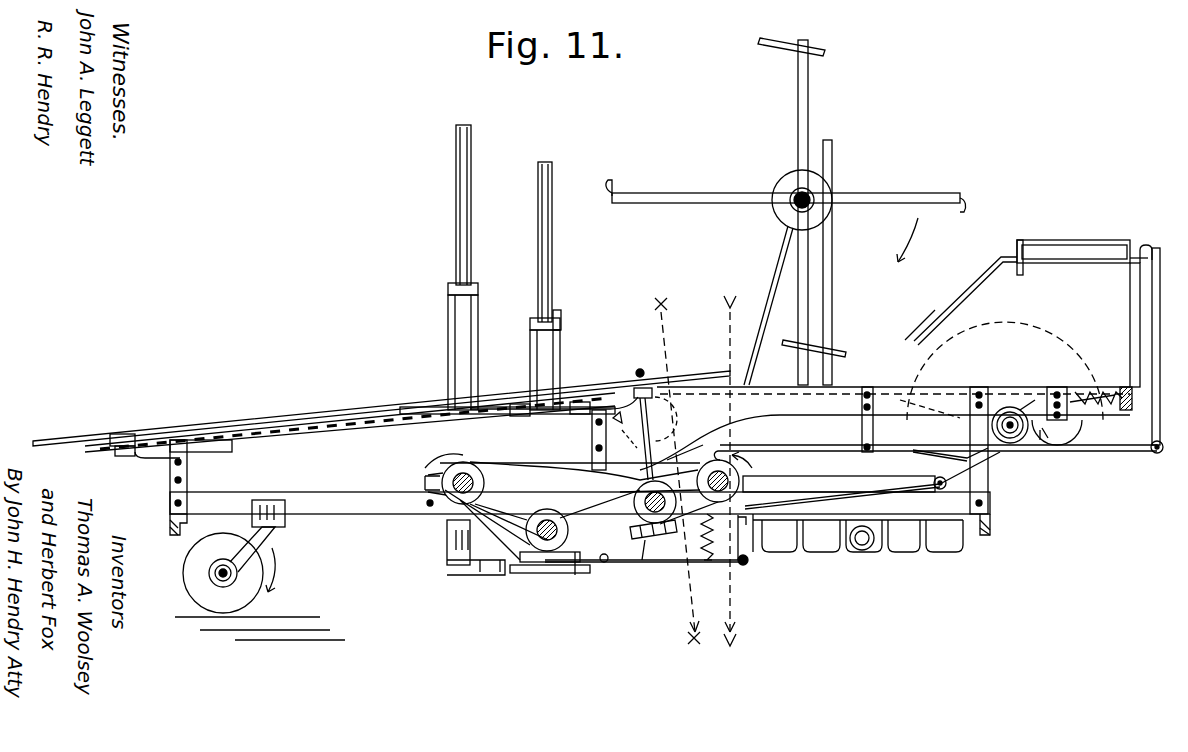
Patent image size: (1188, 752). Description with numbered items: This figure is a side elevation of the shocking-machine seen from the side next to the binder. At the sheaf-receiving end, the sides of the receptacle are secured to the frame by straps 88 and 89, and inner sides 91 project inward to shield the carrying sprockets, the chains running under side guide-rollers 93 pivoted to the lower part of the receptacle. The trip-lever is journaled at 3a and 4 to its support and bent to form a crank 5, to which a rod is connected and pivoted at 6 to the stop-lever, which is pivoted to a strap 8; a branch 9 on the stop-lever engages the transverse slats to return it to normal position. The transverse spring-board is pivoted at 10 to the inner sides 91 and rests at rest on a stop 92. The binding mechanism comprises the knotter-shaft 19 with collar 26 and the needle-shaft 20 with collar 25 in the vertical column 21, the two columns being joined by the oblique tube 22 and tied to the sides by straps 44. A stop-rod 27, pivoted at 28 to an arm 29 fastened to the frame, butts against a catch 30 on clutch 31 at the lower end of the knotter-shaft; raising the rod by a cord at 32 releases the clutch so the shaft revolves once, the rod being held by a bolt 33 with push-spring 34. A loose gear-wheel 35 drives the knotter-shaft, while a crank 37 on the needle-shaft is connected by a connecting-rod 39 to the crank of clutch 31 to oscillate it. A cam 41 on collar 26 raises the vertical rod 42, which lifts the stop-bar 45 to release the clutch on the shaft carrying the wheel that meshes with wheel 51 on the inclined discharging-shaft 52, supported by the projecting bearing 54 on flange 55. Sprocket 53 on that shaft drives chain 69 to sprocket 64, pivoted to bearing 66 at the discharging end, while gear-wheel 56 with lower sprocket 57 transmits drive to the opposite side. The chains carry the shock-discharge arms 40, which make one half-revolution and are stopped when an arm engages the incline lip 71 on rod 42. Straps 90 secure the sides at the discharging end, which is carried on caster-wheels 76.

The needle-shaft 20 is at (456, 181).
The collar 25 is at (448, 289).
The vertical column 21 is at (448, 349).
The knotter-shaft 19 is at (552, 237).
The collar 26 is at (530, 324).
The cam 41 is at (561, 312).
The vertical rod 42 is at (560, 338).
The shock-discharge arms 40 is at (700, 373).
The flange 55 is at (342, 414).
The chain 69 is at (200, 428).
The sprocket 64 is at (145, 434).
The projecting bearing 66 is at (148, 458).
The strap 90 is at (187, 472).
The caster-wheel 76 is at (185, 597).
The oblique tube 22 is at (447, 545).
The crank 37 is at (463, 566).
The connecting-rod 39 is at (490, 579).
The clutch 31 is at (530, 575).
The catch 30 is at (545, 574).
The gear-wheel 35 is at (586, 567).
The connection point 32 is at (604, 562).
The stop-rod 27 is at (668, 564).
The lower sprocket 57 is at (643, 562).
The gear-wheel 56 is at (659, 536).
The bolt 33 is at (708, 572).
The spiral tension push-spring 34 is at (718, 537).
The pivot 28 is at (748, 563).
The arm 29 is at (746, 541).
The strap 44 is at (500, 412).
The incline lip 71 is at (530, 412).
The strap 89 is at (592, 438).
The stop-bar 45 is at (580, 466).
The gear-wheel 51 is at (653, 482).
The inclined discharging-shaft 52 is at (641, 369).
The sprocket 53 is at (634, 388).
The projecting bearing 54 is at (600, 402).
The strap 88 is at (990, 488).
The side guide-roller 93 is at (940, 477).
The inner side 91 is at (884, 468).
The stop 92 is at (1125, 410).
The strap 8 is at (875, 419).
The branch 9 is at (945, 453).
The pivot 10 is at (992, 428).
The journal 4 is at (1128, 262).
The crank 5 is at (1148, 243).
The pivot 6 is at (1157, 454).
The journal 3a is at (1024, 266).